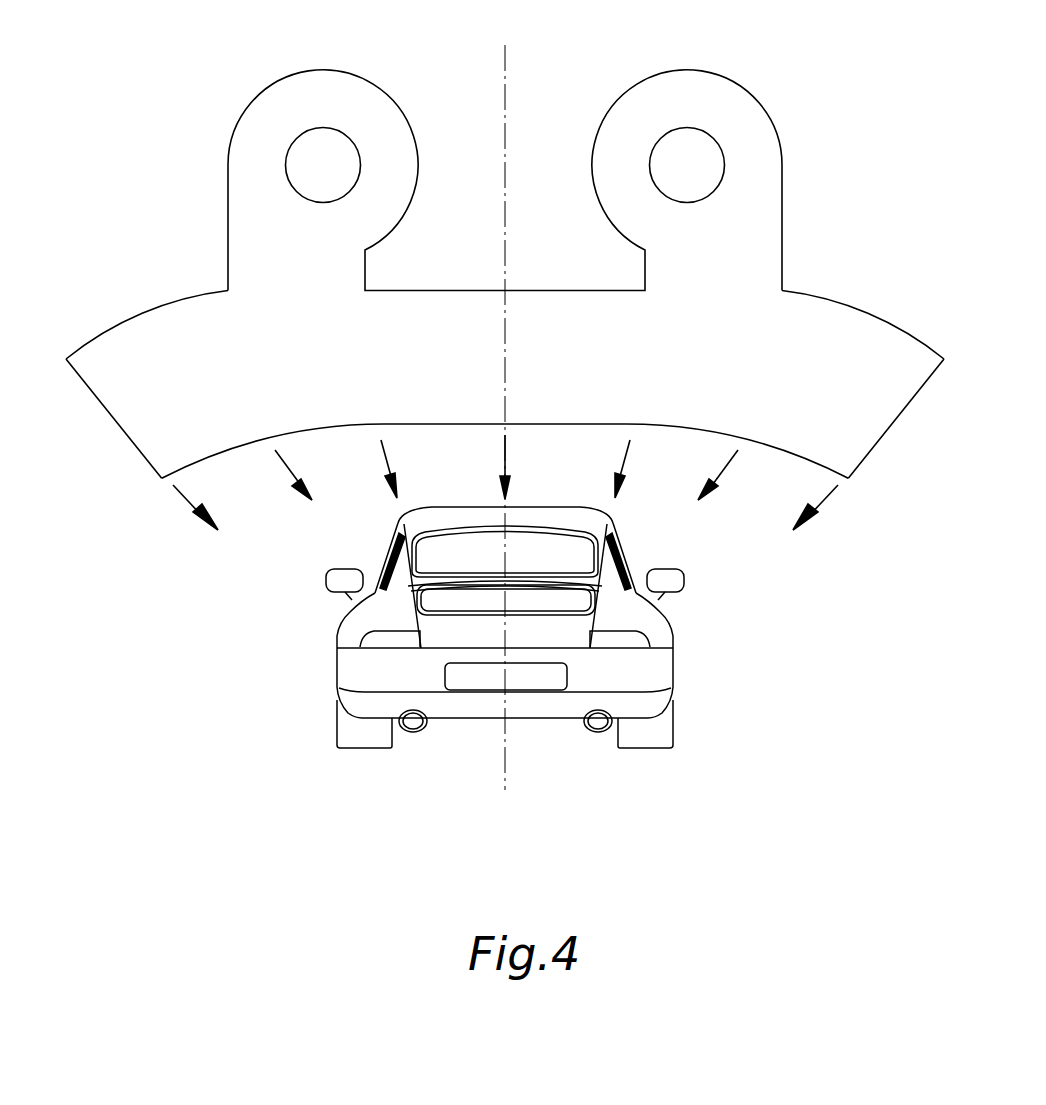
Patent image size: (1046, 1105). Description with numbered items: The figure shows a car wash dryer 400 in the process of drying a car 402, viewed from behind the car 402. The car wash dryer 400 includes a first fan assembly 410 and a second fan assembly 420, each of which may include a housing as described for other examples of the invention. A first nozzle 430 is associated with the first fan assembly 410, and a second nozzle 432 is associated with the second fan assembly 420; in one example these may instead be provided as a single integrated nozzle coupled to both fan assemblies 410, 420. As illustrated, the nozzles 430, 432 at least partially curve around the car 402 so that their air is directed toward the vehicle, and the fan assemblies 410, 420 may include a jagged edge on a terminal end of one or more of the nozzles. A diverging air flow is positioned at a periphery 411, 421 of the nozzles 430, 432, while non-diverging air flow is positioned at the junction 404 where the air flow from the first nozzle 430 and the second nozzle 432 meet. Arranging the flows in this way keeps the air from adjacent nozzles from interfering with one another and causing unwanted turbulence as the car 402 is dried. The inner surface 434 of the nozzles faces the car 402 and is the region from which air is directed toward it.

The car wash dryer 400 is at (503, 455).
The car 402 is at (392, 543).
The junction 404 is at (504, 68).
The first fan assembly 410 is at (323, 85).
The periphery 411 is at (132, 410).
The second fan assembly 420 is at (692, 157).
The periphery 421 is at (868, 418).
The first nozzle 430 is at (205, 310).
The second nozzle 432 is at (805, 310).
The inner light emitting surface 434 is at (278, 438).